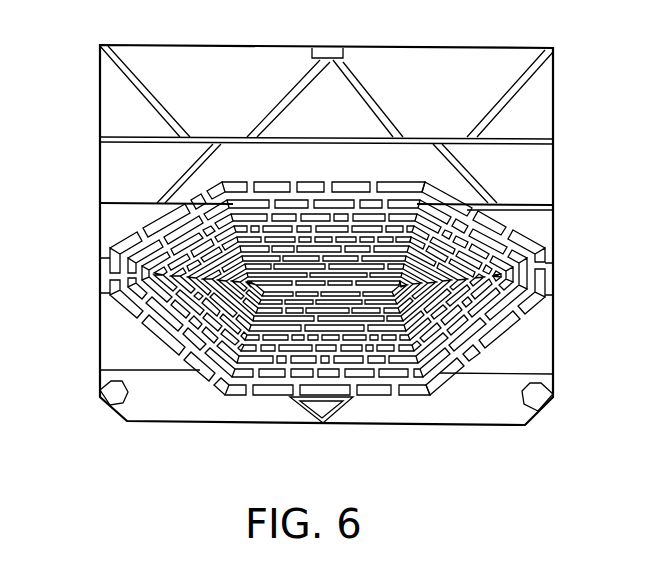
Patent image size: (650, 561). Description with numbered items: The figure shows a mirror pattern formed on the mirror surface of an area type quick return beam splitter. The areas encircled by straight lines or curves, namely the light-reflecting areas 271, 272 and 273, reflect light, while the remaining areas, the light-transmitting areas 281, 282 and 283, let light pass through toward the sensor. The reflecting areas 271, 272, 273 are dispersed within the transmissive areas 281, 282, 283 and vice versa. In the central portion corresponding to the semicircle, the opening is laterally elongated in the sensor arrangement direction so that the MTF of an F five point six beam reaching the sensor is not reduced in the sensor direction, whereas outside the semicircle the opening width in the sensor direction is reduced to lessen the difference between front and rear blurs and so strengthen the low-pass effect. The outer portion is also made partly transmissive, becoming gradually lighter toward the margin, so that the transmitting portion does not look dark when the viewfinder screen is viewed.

The light-reflecting area 271 is at (468, 60).
The light-reflecting area 272 is at (397, 192).
The light-reflecting area 273 is at (500, 250).
The light-transmitting area 281 is at (120, 203).
The light-transmitting area 282 is at (208, 345).
The light-transmitting area 283 is at (290, 338).